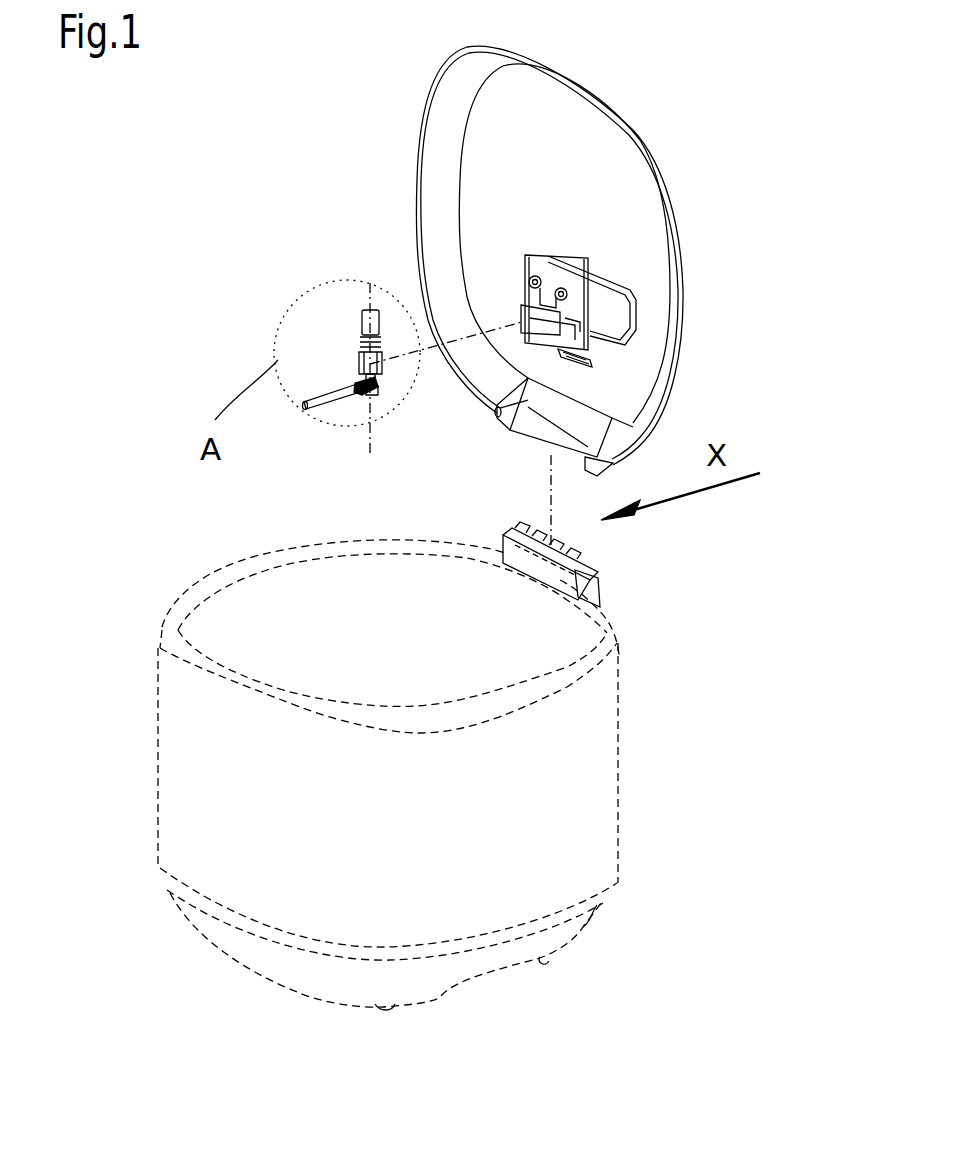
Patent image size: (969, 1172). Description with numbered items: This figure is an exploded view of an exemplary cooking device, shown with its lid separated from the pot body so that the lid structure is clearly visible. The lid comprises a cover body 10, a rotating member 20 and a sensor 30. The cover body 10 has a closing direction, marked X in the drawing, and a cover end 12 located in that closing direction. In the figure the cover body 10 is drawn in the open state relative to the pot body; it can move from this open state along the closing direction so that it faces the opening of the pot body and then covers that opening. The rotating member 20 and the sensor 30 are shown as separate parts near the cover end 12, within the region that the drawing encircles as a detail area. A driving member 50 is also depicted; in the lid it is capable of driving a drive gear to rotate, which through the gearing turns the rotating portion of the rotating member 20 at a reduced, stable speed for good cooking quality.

The cover body 10 is at (412, 218).
The cover end 12 is at (580, 213).
The rotating member 20 is at (350, 327).
The sensor 30 is at (377, 385).
The driving member 50 is at (333, 400).